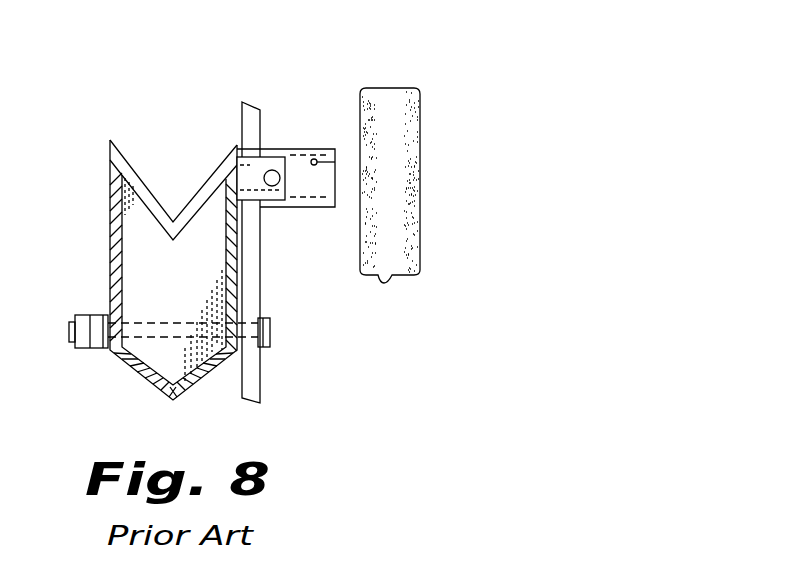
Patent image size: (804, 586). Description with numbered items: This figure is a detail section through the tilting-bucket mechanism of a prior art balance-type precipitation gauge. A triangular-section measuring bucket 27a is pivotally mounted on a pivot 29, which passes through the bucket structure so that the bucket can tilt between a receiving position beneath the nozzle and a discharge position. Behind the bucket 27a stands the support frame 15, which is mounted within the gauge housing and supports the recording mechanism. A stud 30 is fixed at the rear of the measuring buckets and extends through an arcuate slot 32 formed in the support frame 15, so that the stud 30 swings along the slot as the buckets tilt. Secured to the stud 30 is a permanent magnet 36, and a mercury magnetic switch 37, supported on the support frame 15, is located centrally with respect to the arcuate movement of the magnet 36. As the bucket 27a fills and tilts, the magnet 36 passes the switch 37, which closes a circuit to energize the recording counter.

The support frame 15 is at (252, 385).
The measuring bucket 27a is at (152, 278).
The pivot 29 is at (73, 344).
The stud 30 is at (252, 175).
The arcuate slot 32 is at (262, 220).
The permanent magnet 36 is at (316, 158).
The mercury magnetic switch 37 is at (392, 210).